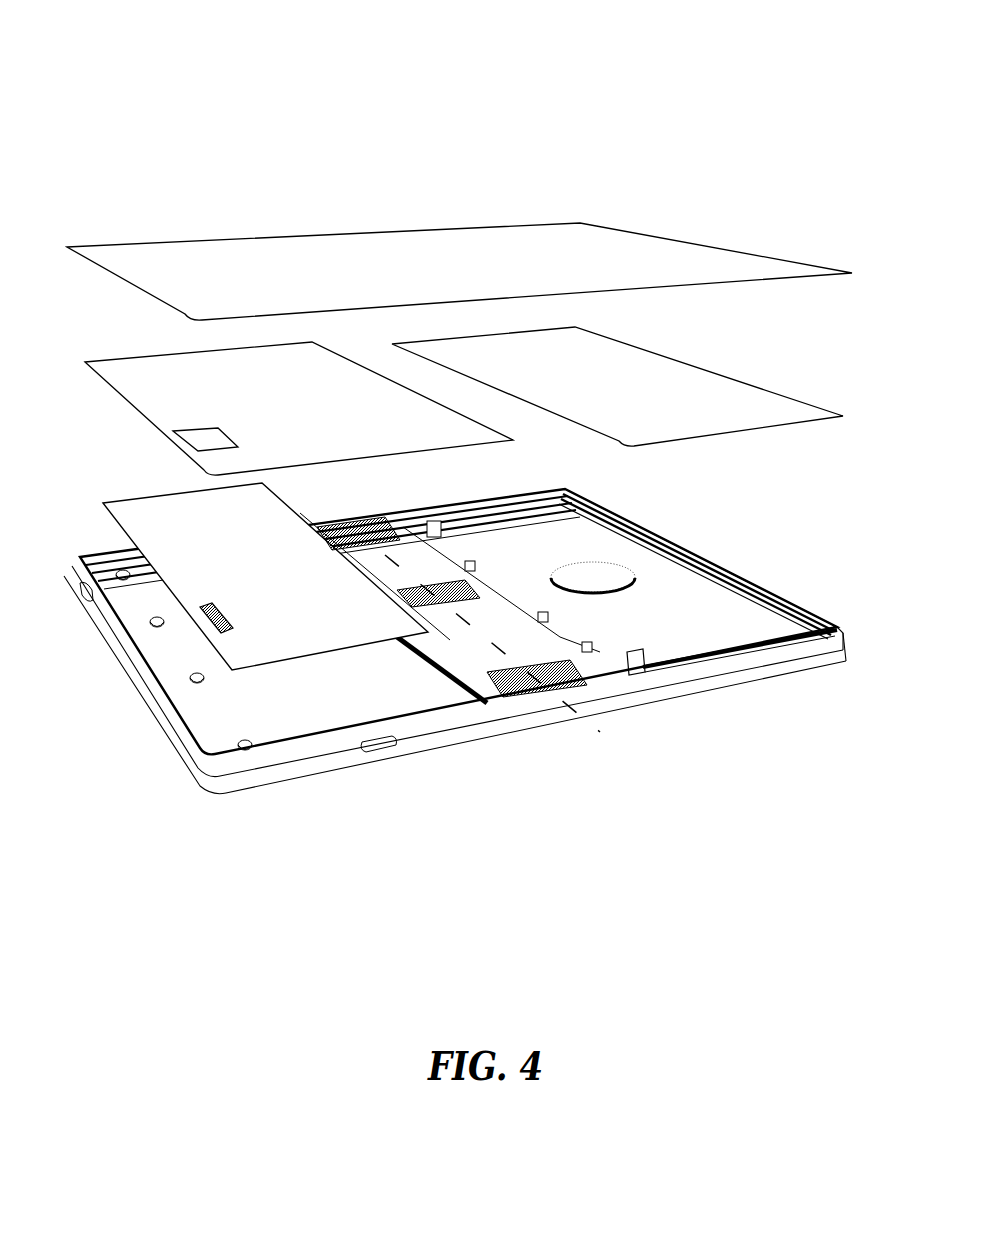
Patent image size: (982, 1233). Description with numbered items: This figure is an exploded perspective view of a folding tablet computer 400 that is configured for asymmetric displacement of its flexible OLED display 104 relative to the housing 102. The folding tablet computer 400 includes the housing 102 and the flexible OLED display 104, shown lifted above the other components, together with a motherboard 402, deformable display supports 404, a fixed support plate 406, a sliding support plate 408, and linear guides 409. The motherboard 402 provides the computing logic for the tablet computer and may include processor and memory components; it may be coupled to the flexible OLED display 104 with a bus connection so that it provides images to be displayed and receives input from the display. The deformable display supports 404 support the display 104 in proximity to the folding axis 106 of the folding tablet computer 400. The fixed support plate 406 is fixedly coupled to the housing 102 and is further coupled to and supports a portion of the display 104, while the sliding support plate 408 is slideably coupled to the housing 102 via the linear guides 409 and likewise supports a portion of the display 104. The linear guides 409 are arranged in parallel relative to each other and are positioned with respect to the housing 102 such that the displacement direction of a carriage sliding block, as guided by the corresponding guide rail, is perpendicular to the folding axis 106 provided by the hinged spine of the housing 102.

The folding tablet computer 400 is at (292, 85).
The housing 102 is at (302, 762).
The flexible OLED display 104 is at (410, 247).
The folding axis 106 is at (318, 496).
The motherboard 402 is at (240, 596).
The deformable display supports 404 is at (380, 535).
The fixed support plate 406 is at (208, 391).
The sliding support plate 408 is at (698, 388).
The linear guides 409 is at (580, 497).